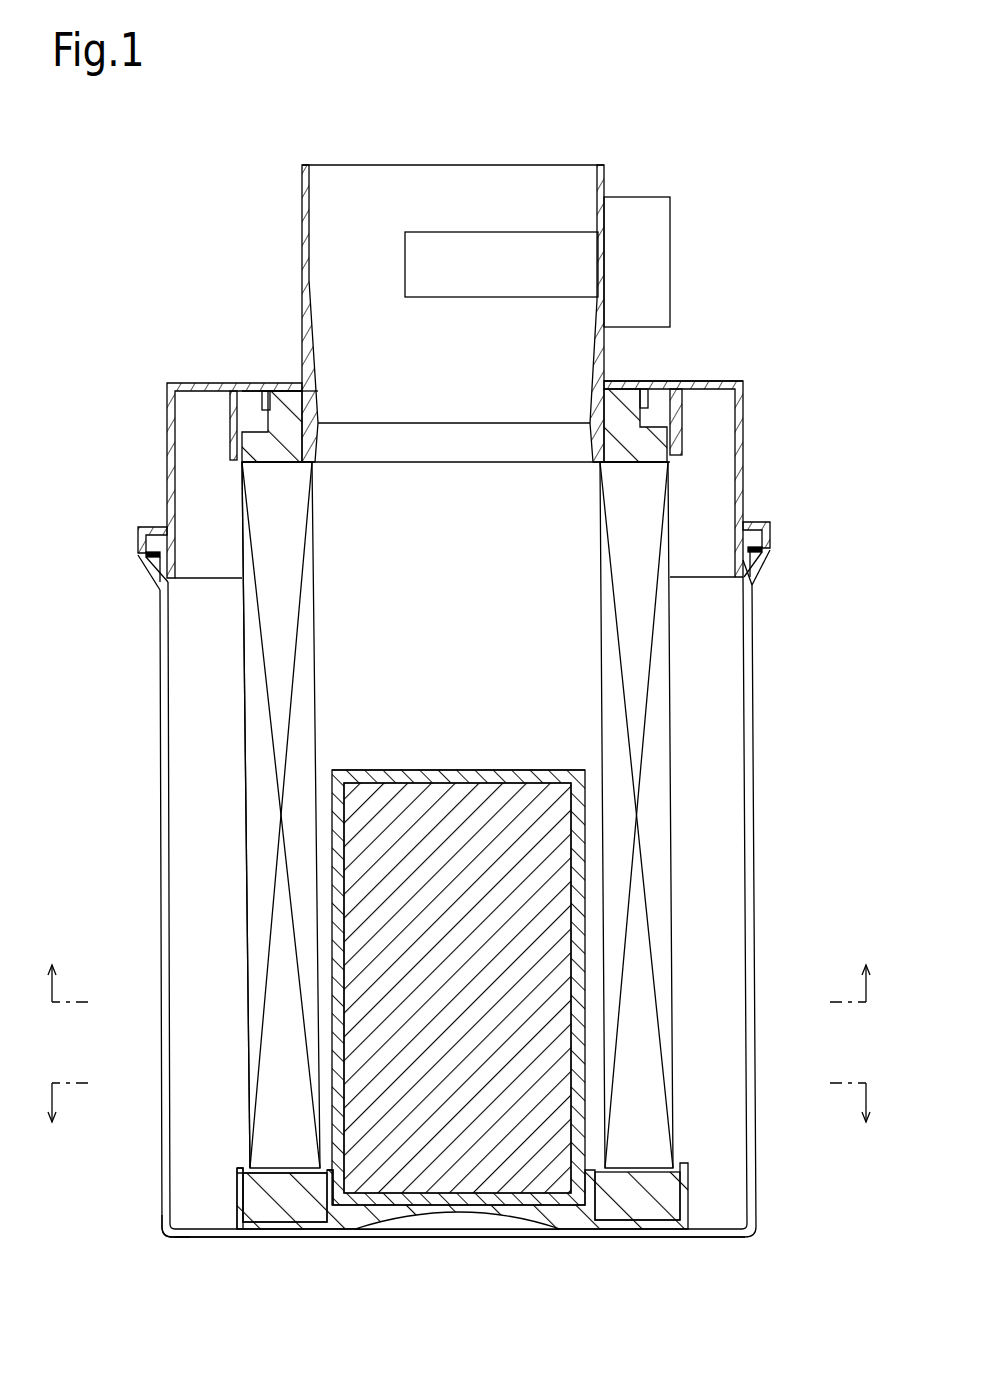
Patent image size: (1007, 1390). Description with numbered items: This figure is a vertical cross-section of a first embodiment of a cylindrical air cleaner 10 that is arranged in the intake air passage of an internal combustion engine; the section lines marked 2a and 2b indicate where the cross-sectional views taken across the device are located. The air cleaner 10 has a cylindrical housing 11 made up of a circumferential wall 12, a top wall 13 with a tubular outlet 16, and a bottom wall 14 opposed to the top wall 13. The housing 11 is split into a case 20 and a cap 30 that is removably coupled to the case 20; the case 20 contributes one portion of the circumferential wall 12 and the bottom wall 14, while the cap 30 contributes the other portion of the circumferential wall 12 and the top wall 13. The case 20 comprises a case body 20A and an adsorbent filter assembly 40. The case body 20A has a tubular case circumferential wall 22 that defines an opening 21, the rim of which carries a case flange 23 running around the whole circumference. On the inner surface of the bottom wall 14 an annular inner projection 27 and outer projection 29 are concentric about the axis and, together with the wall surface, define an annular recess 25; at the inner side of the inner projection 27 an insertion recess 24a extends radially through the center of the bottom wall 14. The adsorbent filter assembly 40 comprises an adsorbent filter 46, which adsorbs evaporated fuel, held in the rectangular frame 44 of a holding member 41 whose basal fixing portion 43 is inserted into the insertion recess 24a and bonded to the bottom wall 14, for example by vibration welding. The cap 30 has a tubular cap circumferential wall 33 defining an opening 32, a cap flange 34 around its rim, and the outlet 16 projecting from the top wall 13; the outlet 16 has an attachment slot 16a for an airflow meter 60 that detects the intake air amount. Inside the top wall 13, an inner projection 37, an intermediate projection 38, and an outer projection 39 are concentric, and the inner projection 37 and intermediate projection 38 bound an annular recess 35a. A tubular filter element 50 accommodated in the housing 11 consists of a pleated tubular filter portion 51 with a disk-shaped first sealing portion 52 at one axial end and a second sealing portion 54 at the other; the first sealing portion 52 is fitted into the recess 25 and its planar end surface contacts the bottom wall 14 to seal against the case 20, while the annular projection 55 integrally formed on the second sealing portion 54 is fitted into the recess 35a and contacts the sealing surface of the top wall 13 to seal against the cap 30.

The air cleaner 10 is at (795, 292).
The housing 11 is at (63, 418).
The circumferential wall 12 is at (725, 479).
The top wall 13 is at (728, 381).
The bottom wall 14 is at (205, 1240).
The outlet 16 is at (303, 182).
The attachment slot 16a is at (608, 240).
The case 20 is at (150, 627).
The case body 20A is at (165, 1238).
The opening 21 is at (752, 590).
The case circumferential wall 22 is at (752, 740).
The case flange 23 is at (768, 565).
The insertion recess 24a is at (428, 1215).
The recess 25 is at (286, 1218).
The inner projection 27 is at (318, 1200).
The outer projection 29 is at (237, 1190).
The cap 30 is at (160, 437).
The opening 32 is at (745, 556).
The cap circumferential wall 33 is at (745, 427).
The cap flange 34 is at (770, 540).
The recess 35a is at (616, 400).
The inner projection 37 is at (316, 410).
The intermediate projection 38 is at (230, 402).
The outer projection 39 is at (230, 440).
The adsorbent filter assembly 40 is at (498, 690).
The holding member 41 is at (474, 768).
The fixing portion 43 is at (598, 1210).
The frame 44 is at (380, 770).
The adsorbent filter 46 is at (427, 805).
The filter element 50 is at (245, 1027).
The filter portion 51 is at (245, 993).
The first sealing portion 52 is at (250, 1238).
The second sealing portion 54 is at (278, 450).
The annular projection 55 is at (272, 396).
The airflow meter 60 is at (518, 250).
The section line 2a is at (456, 1118).
The section line 2b is at (457, 969).